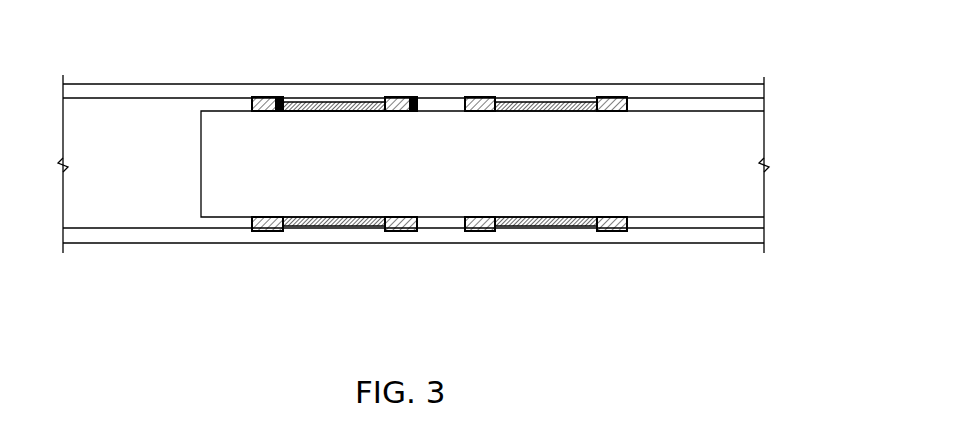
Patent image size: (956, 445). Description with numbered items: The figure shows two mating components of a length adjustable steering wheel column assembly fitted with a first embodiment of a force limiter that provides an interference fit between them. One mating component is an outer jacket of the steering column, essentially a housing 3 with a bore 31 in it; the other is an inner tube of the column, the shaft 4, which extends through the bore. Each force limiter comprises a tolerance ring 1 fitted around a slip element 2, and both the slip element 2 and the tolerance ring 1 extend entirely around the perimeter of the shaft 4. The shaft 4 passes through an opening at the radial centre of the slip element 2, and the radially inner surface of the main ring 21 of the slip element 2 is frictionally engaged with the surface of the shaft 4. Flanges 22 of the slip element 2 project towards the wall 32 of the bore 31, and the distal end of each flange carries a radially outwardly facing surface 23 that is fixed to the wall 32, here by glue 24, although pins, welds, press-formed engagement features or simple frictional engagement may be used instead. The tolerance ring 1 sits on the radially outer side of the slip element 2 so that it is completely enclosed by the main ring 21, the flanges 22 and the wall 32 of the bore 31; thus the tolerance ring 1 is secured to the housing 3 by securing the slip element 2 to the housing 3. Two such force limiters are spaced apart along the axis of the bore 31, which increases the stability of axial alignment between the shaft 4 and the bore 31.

The tolerance ring 1 is at (342, 102).
The slip element 2 is at (380, 100).
The housing 3 is at (713, 90).
The shaft 4 is at (703, 196).
The main ring 21 is at (302, 112).
The flanges 22 is at (260, 97).
The radially outwardly facing surface 23 is at (277, 101).
The glue 24 is at (262, 233).
The bore 31 is at (758, 104).
The wall 32 is at (182, 99).